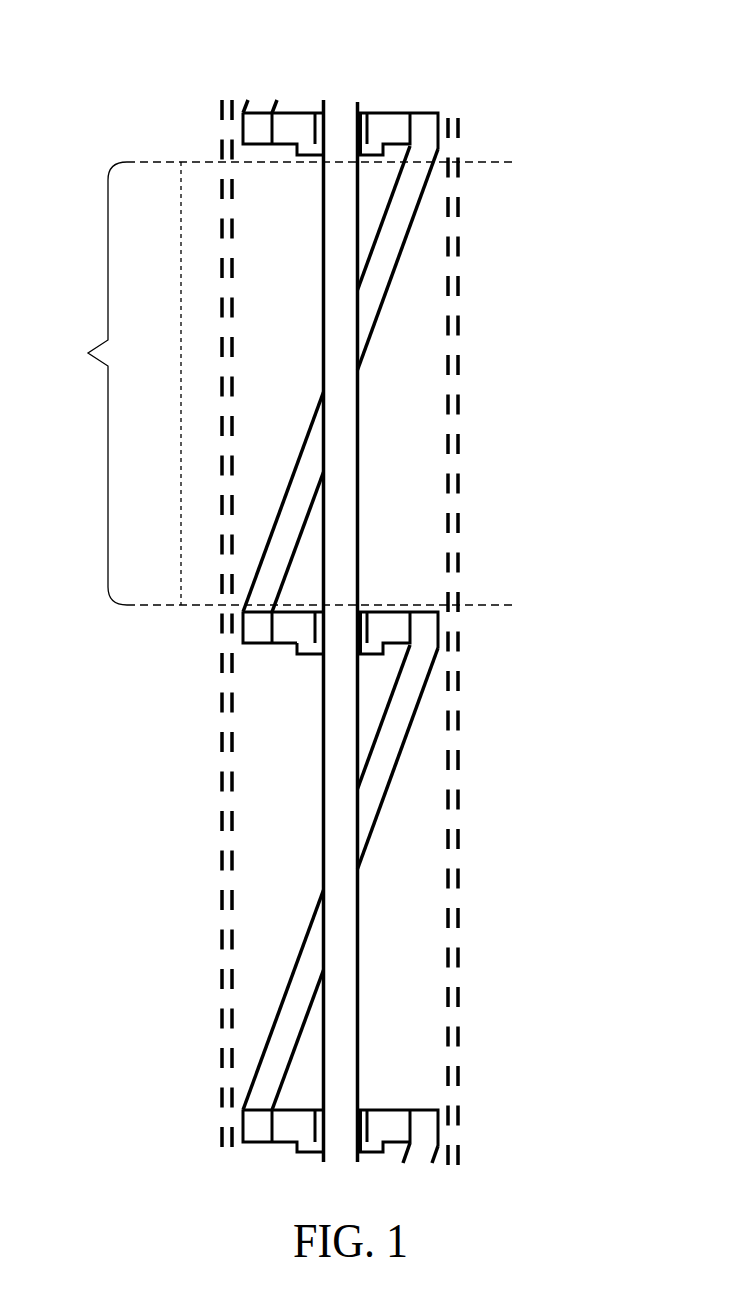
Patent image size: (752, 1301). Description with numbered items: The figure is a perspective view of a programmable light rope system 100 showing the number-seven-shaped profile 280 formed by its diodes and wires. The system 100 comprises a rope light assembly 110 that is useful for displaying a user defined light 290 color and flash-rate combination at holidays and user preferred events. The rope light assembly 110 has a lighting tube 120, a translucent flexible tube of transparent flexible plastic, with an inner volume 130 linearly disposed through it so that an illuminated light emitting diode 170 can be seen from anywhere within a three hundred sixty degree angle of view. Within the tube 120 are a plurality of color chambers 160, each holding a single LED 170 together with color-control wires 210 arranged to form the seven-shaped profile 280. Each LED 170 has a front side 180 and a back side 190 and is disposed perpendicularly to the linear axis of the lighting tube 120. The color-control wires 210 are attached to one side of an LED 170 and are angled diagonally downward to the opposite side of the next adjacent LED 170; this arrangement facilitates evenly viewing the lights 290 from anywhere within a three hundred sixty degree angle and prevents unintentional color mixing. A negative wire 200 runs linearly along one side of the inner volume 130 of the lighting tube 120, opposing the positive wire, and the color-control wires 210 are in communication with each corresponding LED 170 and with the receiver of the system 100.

The programmable light rope system 100 is at (605, 58).
The rope light assembly 110 is at (635, 116).
The lighting tube 120 is at (455, 868).
The inner volume 130 is at (402, 947).
The color chamber 160 is at (88, 353).
The light emitting diode (LED) 170 is at (390, 1127).
The front side 180 is at (288, 648).
The back side 190 is at (388, 612).
The negative wire 200 is at (340, 480).
The color-control wire 210 is at (397, 218).
The number 7-shaped profile 280 is at (372, 299).
The light 290 is at (358, 113).